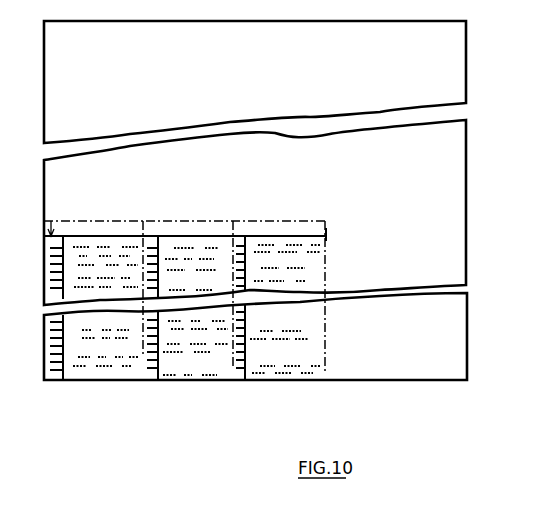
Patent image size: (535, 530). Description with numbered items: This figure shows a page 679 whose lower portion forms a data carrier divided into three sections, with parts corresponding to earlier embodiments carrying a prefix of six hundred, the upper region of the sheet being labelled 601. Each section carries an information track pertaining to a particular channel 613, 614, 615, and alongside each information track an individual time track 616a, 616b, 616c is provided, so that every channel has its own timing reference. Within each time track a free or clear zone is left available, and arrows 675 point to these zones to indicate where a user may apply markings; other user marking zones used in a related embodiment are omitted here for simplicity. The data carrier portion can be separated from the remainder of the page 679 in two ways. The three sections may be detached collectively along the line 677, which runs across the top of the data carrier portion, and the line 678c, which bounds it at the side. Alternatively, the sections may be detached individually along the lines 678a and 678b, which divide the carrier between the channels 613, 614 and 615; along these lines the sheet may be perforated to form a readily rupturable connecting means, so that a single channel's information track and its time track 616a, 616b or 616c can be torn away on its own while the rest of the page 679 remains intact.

The upper board 601 is at (327, 21).
The page 679 is at (255, 212).
The channel 614 is at (193, 381).
The line 677 is at (120, 216).
The arrows 675 is at (156, 227).
The time track 616a is at (72, 418).
The time track 616b is at (157, 381).
The time track 616c is at (250, 381).
The channel 613 is at (96, 380).
The channel 615 is at (293, 381).
The line 678a is at (143, 356).
The line 678b is at (233, 366).
The line 678c is at (325, 372).